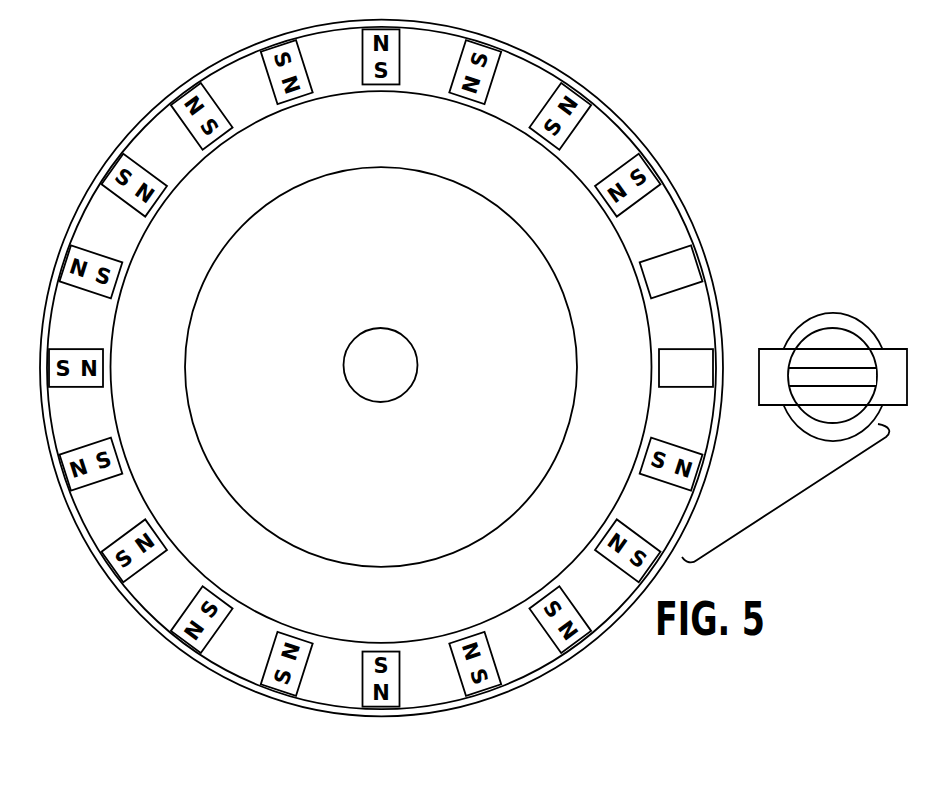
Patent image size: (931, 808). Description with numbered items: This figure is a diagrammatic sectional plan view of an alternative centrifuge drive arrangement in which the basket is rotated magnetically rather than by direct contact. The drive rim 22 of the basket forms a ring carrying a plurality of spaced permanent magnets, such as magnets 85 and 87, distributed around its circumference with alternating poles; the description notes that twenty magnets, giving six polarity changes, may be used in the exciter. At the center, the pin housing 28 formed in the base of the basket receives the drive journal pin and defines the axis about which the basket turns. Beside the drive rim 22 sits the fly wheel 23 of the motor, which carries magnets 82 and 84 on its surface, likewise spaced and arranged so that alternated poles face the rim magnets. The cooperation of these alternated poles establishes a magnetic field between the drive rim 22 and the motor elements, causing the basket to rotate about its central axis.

The drive rim 22 is at (562, 74).
The fly wheel 23 is at (811, 318).
The pin housing 28 is at (399, 387).
The magnet 82 is at (759, 360).
The magnet 84 is at (906, 349).
The magnet 85 is at (678, 255).
The magnet 87 is at (709, 398).